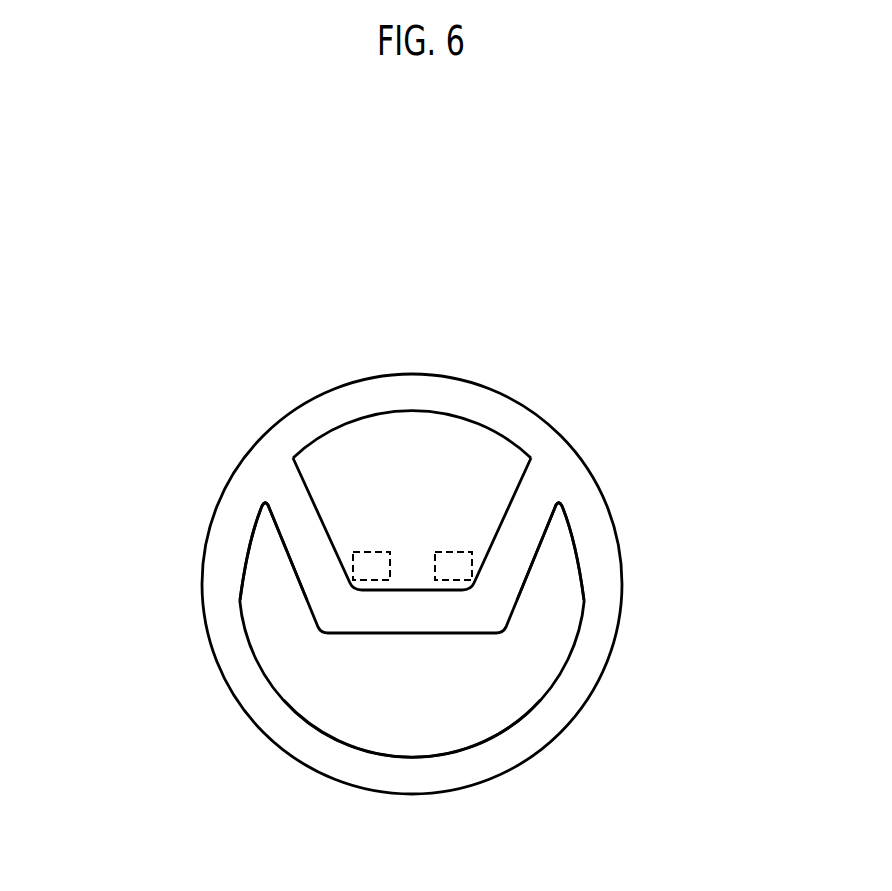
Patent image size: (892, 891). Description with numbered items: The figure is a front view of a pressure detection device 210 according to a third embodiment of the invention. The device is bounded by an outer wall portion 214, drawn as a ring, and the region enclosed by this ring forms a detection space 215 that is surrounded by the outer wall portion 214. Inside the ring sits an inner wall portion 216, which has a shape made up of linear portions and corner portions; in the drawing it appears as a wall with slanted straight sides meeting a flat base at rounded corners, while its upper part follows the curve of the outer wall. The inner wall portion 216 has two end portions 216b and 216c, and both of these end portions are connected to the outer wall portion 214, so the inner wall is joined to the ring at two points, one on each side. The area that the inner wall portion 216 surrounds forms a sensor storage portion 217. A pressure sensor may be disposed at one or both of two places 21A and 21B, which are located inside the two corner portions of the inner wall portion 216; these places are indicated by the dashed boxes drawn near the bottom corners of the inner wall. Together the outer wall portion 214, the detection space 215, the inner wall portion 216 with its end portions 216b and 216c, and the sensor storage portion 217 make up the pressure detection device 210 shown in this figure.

The pressure detection device 210 is at (615, 455).
The outer wall portion 214 is at (562, 702).
The detection space 215 is at (377, 728).
The inner wall portion 216 is at (520, 553).
The end portion 216b is at (538, 488).
The end portion 216c is at (292, 488).
The sensor storage portion 217 is at (445, 438).
The place inside corner portion 21A is at (452, 568).
The place inside corner portion 21B is at (368, 568).